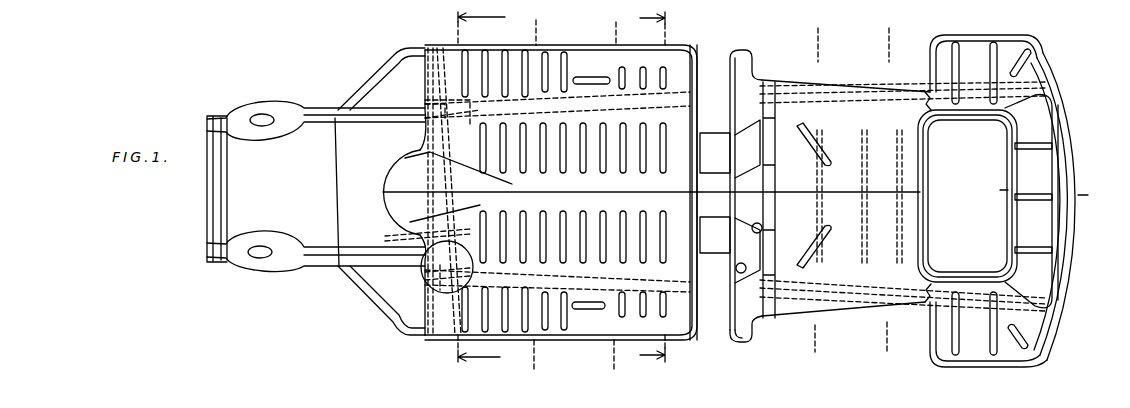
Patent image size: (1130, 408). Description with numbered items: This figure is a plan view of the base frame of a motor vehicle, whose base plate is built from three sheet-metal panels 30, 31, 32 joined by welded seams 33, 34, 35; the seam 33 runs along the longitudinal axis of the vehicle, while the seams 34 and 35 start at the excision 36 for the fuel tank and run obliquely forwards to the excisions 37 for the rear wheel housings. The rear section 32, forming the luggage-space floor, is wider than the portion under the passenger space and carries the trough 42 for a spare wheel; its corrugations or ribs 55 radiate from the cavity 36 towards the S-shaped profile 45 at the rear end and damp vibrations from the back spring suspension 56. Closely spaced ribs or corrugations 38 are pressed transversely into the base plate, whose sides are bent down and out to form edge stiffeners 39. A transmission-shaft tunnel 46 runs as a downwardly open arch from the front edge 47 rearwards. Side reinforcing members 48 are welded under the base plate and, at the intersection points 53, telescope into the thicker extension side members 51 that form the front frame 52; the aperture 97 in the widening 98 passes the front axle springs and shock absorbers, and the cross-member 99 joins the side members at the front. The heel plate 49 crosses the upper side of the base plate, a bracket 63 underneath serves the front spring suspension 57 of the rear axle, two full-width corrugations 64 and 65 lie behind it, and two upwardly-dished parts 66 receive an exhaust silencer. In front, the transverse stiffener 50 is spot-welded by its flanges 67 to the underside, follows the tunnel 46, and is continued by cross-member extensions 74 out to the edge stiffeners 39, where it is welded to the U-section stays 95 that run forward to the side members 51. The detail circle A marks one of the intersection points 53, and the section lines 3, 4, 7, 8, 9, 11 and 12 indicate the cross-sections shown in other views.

The section line 3- 3 is at (1041, 193).
The section line 4- 4 is at (481, 190).
The section line 7- 7 is at (534, 195).
The section line 8- 8 is at (612, 198).
The section line 9- 9 is at (646, 192).
The section line 11- 11 is at (815, 189).
The section line 12- 12 is at (882, 190).
The sheet-metal panel 30 is at (571, 331).
The sheet-metal panel 31 is at (590, 57).
The rear section 32 is at (1056, 201).
The seam 33 is at (965, 196).
The seam 34 is at (914, 87).
The seam 35 is at (914, 311).
The excision for the fuel tank 36 is at (967, 196).
The excision for the rear wheel housing 37 is at (846, 196).
The ribs or corrugations 38 is at (573, 193).
The edge stiffener 39 is at (514, 205).
The trough 42 is at (967, 196).
The S-shaped profile 45 is at (1072, 206).
The transmission-shaft tunnel 46 is at (458, 181).
The front edge 47 is at (534, 192).
The side reinforcing member 48 is at (609, 201).
The cross member (heel plate) 49 is at (714, 182).
The transverse stiffener 50 is at (388, 192).
The extension side member 51 is at (336, 192).
The front frame 52 is at (259, 189).
The intersection point 53 is at (430, 192).
The corrugations or ribs 55 is at (1062, 198).
The back spring suspension 56 is at (988, 207).
The front spring suspension 57 is at (741, 198).
The bracket 63 is at (684, 209).
The corrugation 64 is at (756, 163).
The corrugation 65 is at (735, 187).
The upwardly-dished part 66 is at (771, 203).
The flange 67 is at (418, 237).
The cross-member extension 74 is at (433, 197).
The stay 95 is at (371, 191).
The aperture 97 is at (266, 101).
The widening 98 is at (316, 108).
The cross-member 99 is at (316, 241).
The detail circle A is at (435, 275).